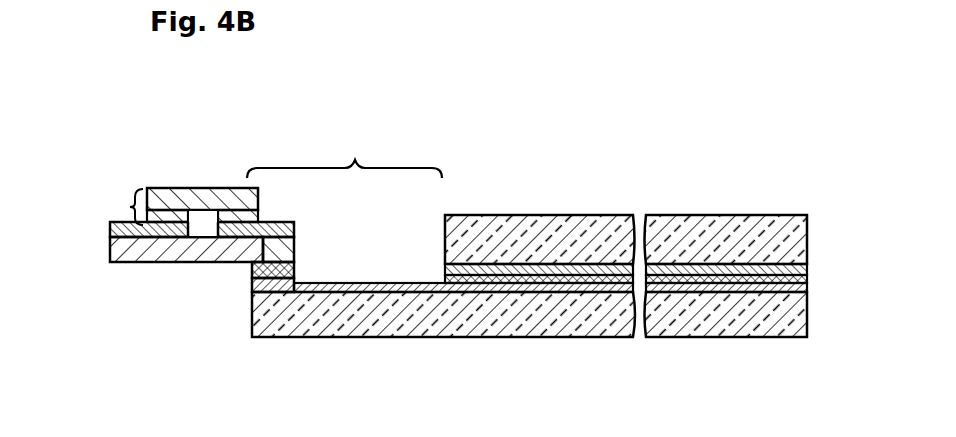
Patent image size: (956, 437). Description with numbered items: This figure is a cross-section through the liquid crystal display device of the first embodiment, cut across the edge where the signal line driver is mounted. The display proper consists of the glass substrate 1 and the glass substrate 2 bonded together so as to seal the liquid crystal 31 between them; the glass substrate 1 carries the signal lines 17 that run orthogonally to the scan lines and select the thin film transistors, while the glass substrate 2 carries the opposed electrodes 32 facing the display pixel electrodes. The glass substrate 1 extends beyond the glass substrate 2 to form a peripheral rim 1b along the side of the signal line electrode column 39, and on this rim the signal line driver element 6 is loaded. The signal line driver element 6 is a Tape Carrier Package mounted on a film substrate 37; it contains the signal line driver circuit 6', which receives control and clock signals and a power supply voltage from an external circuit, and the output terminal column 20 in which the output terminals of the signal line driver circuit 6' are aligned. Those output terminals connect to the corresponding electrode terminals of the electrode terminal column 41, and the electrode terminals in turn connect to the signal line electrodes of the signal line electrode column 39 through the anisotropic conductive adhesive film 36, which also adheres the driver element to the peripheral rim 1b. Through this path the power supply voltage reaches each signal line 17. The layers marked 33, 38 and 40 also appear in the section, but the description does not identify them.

The glass substrate 1 is at (792, 312).
The peripheral rim 1b is at (344, 151).
The glass substrate 2 is at (755, 228).
The signal line driver element 6 is at (123, 206).
The signal line driver circuit 6' is at (202, 157).
The signal line 17 is at (400, 283).
The output terminal column 20 is at (260, 217).
The liquid crystal 31 is at (597, 272).
The opposed electrode 32 is at (807, 268).
The electrode layer 33 is at (807, 280).
The anisotropic conductive adhesive film 36 is at (250, 280).
The film substrate 37 is at (148, 255).
The electrode film 38 is at (110, 226).
The signal line electrode column 39 is at (252, 294).
The electrode layer 40 is at (162, 190).
The electrode terminal column 41 is at (252, 268).